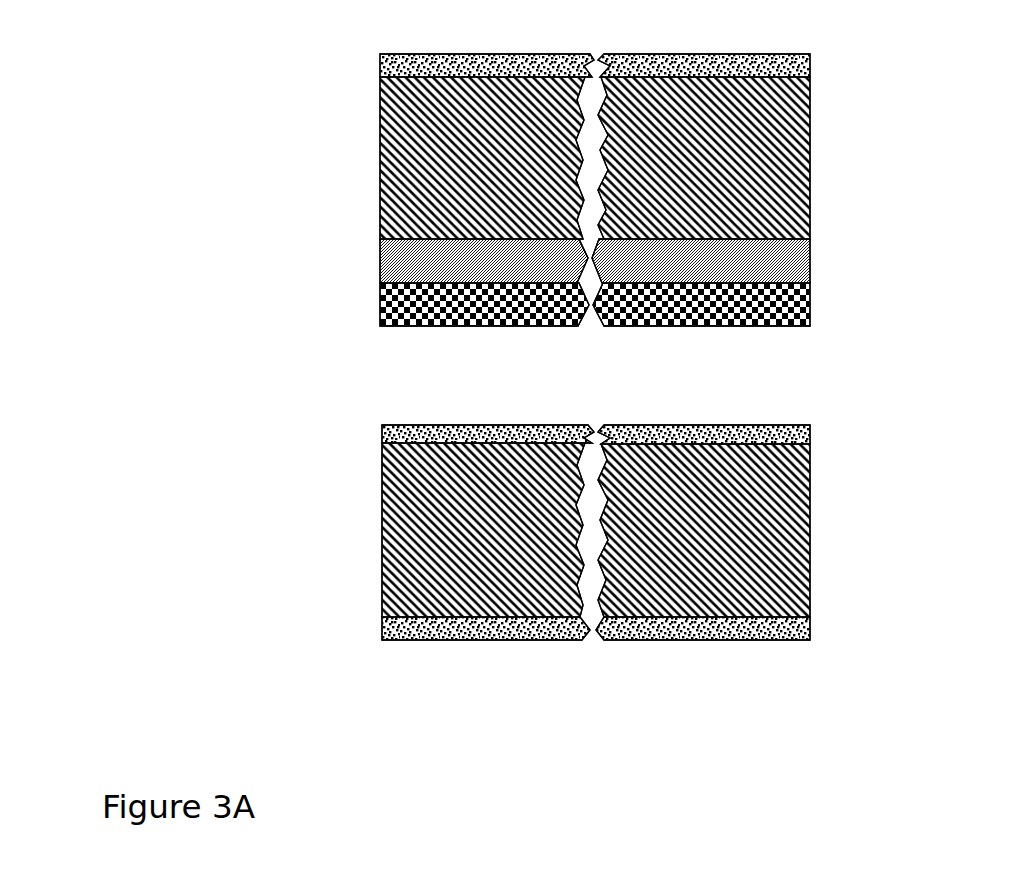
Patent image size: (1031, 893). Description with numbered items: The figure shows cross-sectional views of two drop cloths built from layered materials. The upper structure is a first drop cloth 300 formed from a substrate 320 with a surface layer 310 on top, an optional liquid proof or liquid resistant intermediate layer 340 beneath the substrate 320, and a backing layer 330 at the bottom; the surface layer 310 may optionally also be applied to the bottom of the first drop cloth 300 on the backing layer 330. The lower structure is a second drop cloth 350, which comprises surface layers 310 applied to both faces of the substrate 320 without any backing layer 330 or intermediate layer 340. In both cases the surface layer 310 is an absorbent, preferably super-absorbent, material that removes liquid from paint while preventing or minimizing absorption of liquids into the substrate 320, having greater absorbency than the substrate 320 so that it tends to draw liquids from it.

The first drop cloth 300 is at (482, 190).
The second drop cloth 350 is at (482, 541).
The surface layer 310 is at (817, 52).
The substrate 320 is at (817, 125).
The intermediate layer 340 is at (817, 255).
The backing layer 330 is at (822, 310).